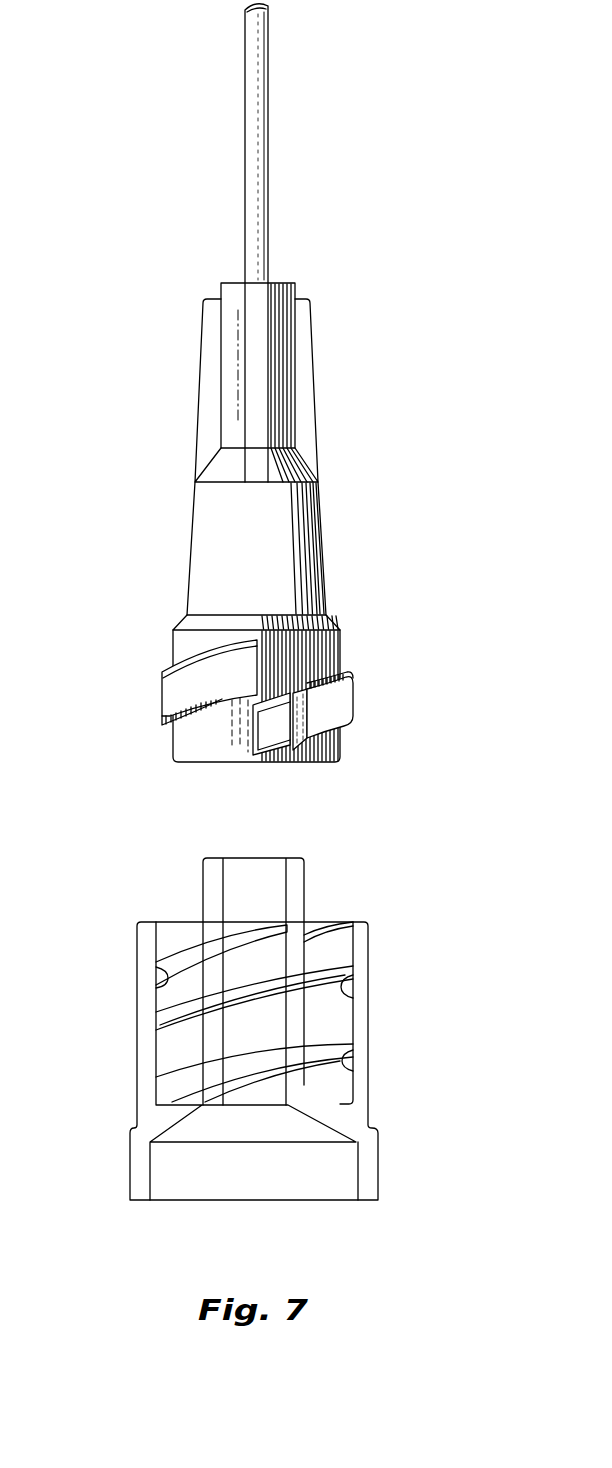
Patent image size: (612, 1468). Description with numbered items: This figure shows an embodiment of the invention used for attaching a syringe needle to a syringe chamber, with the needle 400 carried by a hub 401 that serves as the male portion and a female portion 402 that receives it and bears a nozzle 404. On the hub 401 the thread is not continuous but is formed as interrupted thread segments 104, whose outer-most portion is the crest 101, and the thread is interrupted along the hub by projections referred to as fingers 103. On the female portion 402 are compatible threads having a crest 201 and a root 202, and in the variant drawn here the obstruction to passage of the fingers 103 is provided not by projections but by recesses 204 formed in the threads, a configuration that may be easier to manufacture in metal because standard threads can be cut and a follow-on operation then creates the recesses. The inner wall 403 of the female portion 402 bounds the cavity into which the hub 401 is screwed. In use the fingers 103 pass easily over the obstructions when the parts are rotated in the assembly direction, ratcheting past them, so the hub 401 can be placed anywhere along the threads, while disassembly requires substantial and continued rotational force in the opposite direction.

The needle 400 is at (270, 147).
The needle hub / cap 401 is at (337, 558).
The interrupted thread segments 104 is at (167, 697).
The crest 101 is at (347, 696).
The projections (fingers) 103 is at (305, 735).
The needle holder body 402 is at (386, 1153).
The nozzle / tubular projection 404 is at (305, 876).
The recess 204 is at (155, 1005).
The crest 201 is at (360, 977).
The body side wall 403 is at (156, 1030).
The root 202 is at (155, 1078).